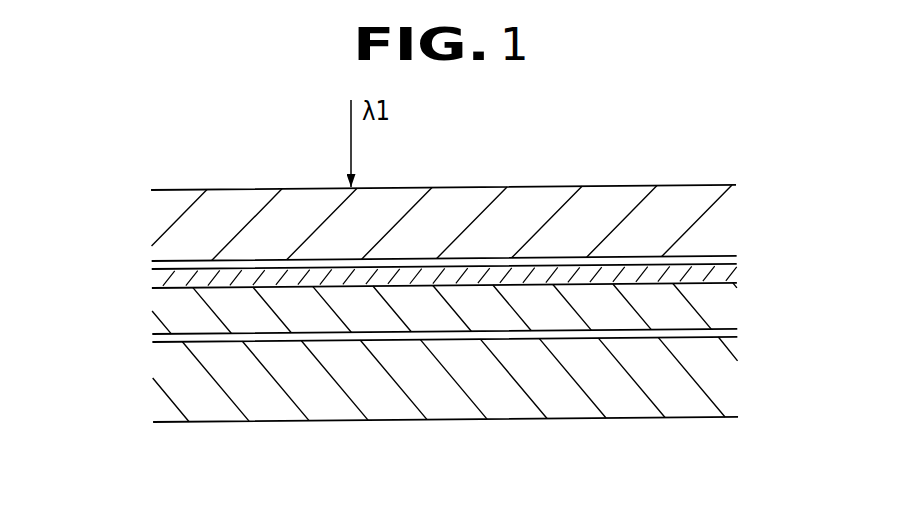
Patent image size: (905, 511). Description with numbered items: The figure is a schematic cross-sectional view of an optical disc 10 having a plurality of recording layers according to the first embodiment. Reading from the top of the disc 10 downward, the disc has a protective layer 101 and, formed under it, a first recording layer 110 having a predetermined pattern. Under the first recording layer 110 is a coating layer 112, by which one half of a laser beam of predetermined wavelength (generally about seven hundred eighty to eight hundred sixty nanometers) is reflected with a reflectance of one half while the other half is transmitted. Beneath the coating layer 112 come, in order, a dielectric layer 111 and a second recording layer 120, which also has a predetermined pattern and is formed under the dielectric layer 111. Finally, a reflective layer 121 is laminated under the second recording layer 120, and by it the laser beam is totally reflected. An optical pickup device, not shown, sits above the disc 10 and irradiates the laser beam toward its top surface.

The optical disc 10 is at (244, 175).
The protective layer 101 is at (145, 228).
The first recording layer 110 is at (148, 267).
The coating layer 112 is at (740, 278).
The dielectric layer 111 is at (733, 315).
The second recording layer 120 is at (148, 340).
The reflective layer 121 is at (147, 403).